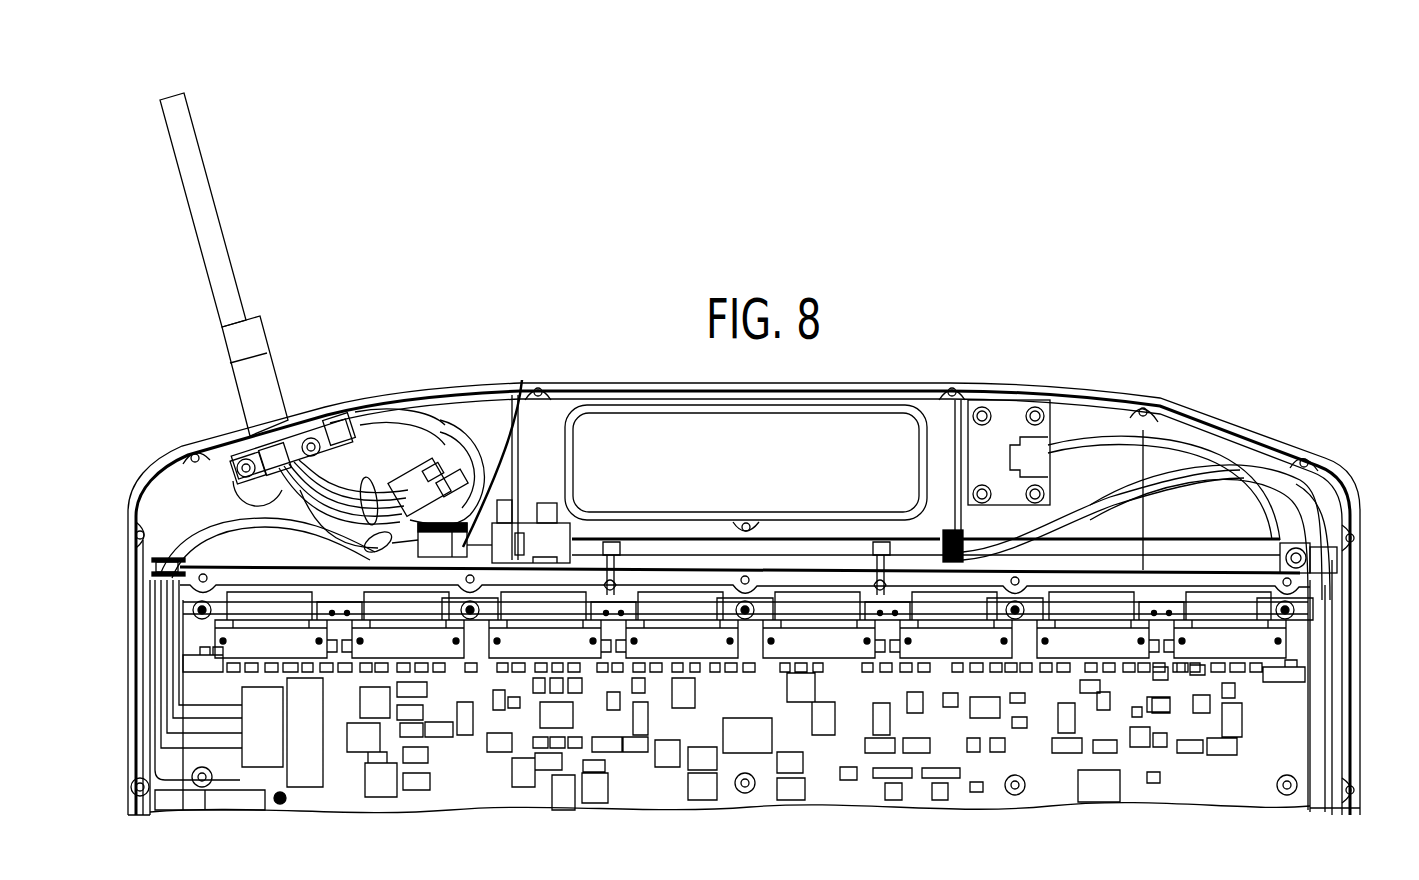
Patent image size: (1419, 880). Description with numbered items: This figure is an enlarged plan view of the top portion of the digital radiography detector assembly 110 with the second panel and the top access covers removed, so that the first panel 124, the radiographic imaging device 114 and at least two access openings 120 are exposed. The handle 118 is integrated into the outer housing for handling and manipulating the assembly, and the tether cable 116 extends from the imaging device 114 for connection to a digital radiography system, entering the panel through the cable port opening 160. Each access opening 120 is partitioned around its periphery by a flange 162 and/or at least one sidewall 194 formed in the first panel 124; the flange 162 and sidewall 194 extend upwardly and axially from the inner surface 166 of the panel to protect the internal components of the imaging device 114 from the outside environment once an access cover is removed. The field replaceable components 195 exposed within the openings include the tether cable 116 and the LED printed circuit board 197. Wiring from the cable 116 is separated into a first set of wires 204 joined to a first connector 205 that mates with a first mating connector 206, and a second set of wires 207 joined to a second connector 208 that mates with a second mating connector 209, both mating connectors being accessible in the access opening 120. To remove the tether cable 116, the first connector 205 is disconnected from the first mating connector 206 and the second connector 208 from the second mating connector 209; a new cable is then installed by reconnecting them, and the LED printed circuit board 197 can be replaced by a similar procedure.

The digital radiography detector assembly 110 is at (1026, 306).
The radiographic imaging device 114 is at (1278, 705).
The tether cable 116 is at (226, 238).
The handle 118 is at (722, 400).
The access opening 120 is at (483, 428).
The first panel 124 is at (152, 500).
The cable port opening 160 is at (283, 416).
The flange 162 is at (424, 400).
The inner surface 166 is at (1255, 505).
The sidewall 194 is at (280, 568).
The field replaceable components 195 is at (226, 346).
The LED printed circuit board 197 is at (1018, 412).
The first set of wires 204 is at (362, 480).
The first connector 205 is at (522, 380).
The first mating connector 206 is at (458, 402).
The second set of wires 207 is at (375, 548).
The second connector 208 is at (512, 518).
The second mating connector 209 is at (540, 525).